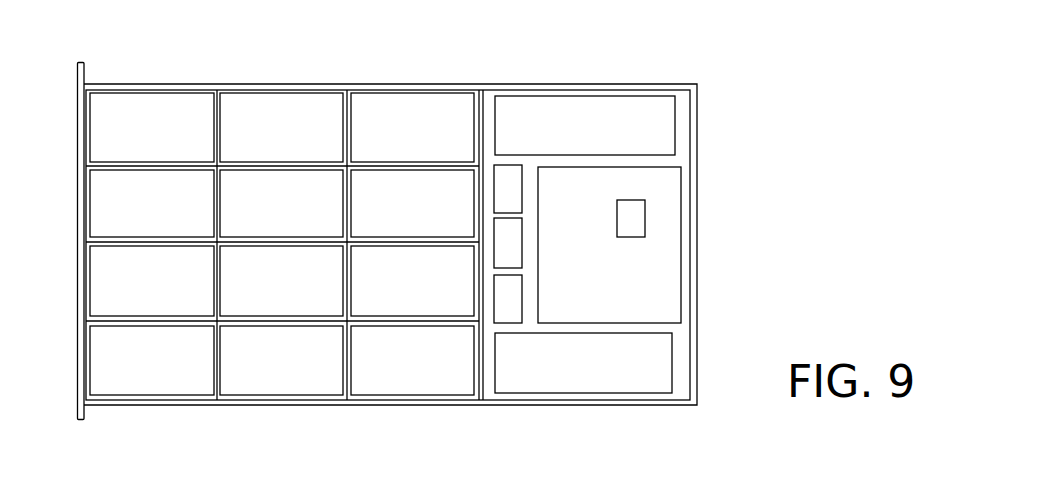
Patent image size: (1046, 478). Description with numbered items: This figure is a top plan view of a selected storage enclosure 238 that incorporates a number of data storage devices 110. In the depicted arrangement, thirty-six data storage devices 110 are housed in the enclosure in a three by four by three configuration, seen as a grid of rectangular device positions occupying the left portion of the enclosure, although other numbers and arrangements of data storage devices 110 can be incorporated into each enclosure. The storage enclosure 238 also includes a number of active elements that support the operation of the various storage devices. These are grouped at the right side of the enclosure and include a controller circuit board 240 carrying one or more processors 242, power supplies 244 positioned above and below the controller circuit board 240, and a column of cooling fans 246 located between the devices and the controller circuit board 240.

The data storage device 110 is at (283, 107).
The storage enclosure 238 is at (713, 227).
The controller circuit board 240 is at (647, 275).
The processor 242 is at (645, 220).
The power supply 244 is at (603, 107).
The cooling fan 246 is at (507, 177).